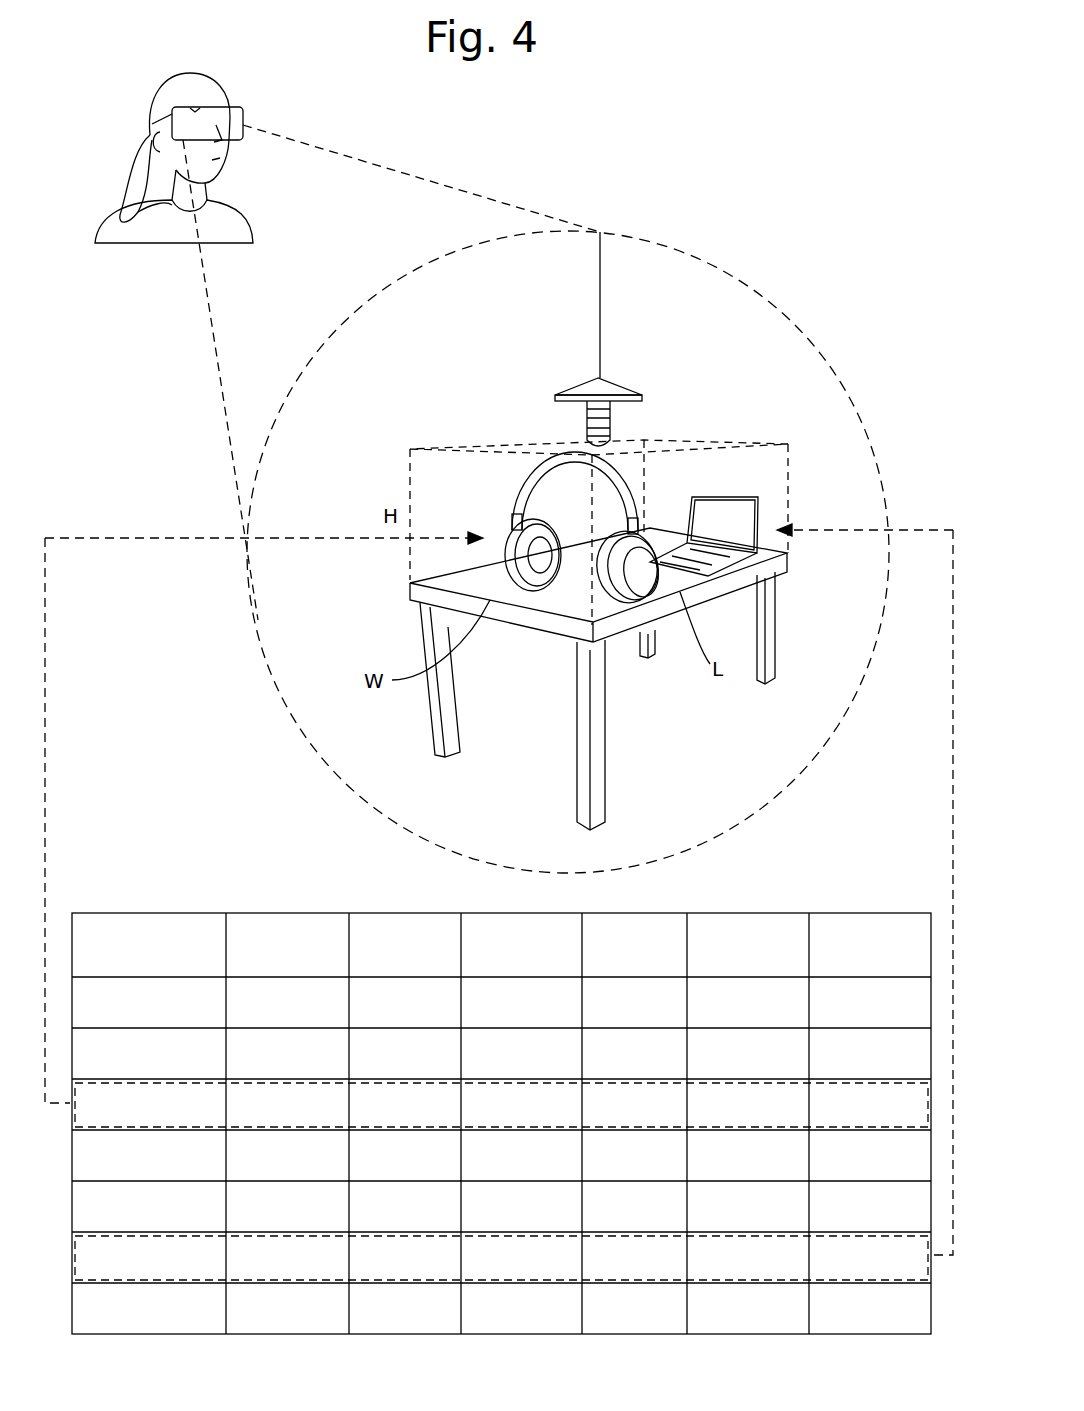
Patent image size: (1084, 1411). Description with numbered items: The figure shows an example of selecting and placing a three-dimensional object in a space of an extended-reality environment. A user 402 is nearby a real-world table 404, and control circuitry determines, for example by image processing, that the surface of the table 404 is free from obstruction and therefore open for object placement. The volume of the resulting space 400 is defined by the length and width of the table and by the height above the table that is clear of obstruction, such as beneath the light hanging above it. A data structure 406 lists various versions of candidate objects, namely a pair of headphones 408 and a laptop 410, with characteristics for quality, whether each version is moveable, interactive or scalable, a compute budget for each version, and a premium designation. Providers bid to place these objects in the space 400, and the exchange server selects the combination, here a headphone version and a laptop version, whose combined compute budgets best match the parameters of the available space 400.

The space 400 is at (796, 483).
The user 402 is at (106, 138).
The table 404 is at (584, 392).
The data structure 406 is at (172, 913).
The headphones 408 is at (533, 468).
The laptop 410 is at (712, 497).